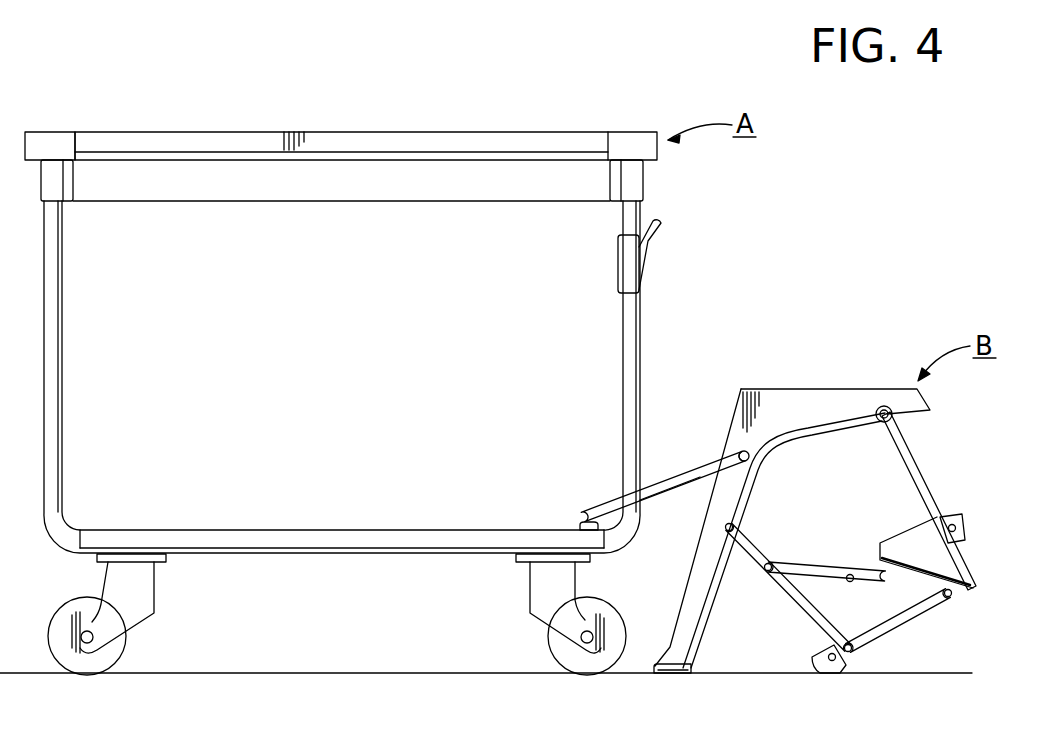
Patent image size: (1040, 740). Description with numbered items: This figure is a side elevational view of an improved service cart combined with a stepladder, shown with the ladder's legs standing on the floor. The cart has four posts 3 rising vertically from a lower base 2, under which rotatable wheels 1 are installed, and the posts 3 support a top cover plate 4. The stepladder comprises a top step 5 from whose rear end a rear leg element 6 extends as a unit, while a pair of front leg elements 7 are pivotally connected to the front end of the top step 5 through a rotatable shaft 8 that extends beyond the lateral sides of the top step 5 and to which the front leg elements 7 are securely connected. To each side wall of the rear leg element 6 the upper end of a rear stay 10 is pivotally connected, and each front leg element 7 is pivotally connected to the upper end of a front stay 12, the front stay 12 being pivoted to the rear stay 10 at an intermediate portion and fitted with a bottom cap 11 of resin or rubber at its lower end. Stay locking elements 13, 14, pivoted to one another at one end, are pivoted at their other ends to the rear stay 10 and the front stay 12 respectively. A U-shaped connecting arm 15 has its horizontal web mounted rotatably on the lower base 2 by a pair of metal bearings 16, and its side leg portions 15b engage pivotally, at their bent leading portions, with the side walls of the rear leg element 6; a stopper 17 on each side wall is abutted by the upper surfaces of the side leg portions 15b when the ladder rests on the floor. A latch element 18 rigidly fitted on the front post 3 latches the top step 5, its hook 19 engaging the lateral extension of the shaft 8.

The rotatable wheels 1 is at (115, 650).
The lower base 2 is at (438, 538).
The posts 3 is at (637, 333).
The top cover plate 4 is at (403, 130).
The top step 5 is at (813, 400).
The rear leg element 6 is at (690, 617).
The front leg elements 7 is at (905, 450).
The rotatable shaft 8 is at (882, 407).
The rear stay 10 is at (820, 625).
The bottom cap 11 is at (820, 665).
The front stay 12 is at (887, 627).
The stay locking element 13 is at (822, 572).
The stay locking element 14 is at (872, 577).
The U-shaped connecting arm 15 is at (663, 480).
The side leg portions 15b is at (681, 488).
The metal bearings 16 is at (560, 524).
The stopper 17 is at (735, 447).
The latch element 18 is at (620, 265).
The hook 19 is at (661, 223).